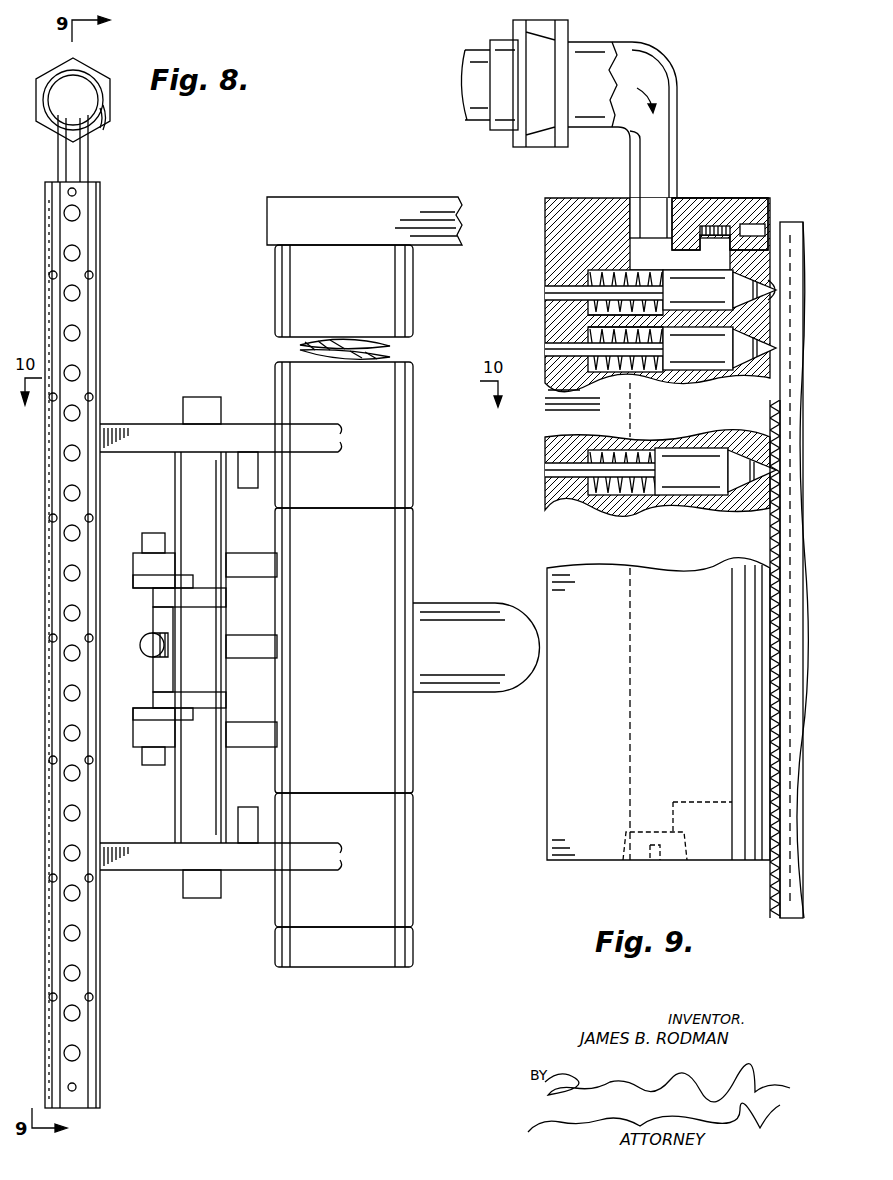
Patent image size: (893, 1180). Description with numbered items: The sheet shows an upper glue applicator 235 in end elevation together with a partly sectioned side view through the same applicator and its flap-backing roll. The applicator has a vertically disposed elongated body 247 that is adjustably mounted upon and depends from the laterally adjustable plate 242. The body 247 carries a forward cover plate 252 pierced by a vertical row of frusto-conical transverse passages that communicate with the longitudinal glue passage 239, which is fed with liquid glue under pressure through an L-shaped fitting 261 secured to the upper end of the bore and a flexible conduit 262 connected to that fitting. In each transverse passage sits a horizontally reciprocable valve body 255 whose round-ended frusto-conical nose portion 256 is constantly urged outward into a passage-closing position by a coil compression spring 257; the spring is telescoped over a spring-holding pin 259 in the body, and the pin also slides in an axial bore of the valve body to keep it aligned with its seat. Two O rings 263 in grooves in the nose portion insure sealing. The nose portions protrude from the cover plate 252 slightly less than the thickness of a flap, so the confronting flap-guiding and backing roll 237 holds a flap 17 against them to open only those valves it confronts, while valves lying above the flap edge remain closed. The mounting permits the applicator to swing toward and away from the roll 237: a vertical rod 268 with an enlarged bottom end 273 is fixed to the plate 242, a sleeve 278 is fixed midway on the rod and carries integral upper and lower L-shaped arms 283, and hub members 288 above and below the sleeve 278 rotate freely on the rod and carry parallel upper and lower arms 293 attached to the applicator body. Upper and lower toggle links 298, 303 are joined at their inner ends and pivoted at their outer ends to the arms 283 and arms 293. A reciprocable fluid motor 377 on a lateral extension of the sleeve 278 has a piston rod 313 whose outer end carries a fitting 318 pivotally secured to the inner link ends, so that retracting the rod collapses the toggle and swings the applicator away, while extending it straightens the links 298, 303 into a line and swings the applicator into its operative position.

In FIG. 9, the flap 17 is at (770, 622).
In FIG. 8, the upper glue applicator 235 is at (108, 645).
In FIG. 9, the upper glue applicator 235 is at (540, 244).
In FIG. 9, the flap-guiding and backing roll 237 is at (756, 554).
In FIG. 9, the longitudinal passage 239 is at (648, 242).
In FIG. 8, the laterally adjustable plate 242 is at (366, 212).
In FIG. 8, the elongated body 247 is at (90, 986).
In FIG. 9, the elongated body 247 is at (548, 434).
In FIG. 8, the forward cover plate 252 is at (80, 960).
In FIG. 9, the forward cover plate 252 is at (745, 200).
In FIG. 9, the valve body 255 is at (710, 372).
In FIG. 8, the frusto-conical nose portion 256 is at (78, 257).
In FIG. 9, the frusto-conical nose portion 256 is at (770, 288).
In FIG. 9, the coil compression spring 257 is at (612, 318).
In FIG. 9, the spring-holding pin 259 is at (545, 288).
In FIG. 8, the L-shaped fitting 261 is at (88, 161).
In FIG. 9, the L-shaped fitting 261 is at (678, 99).
In FIG. 9, the flexible conduit 262 is at (470, 56).
In FIG. 9, the O rings 263 is at (742, 506).
In FIG. 8, the vertical rod 268 is at (388, 356).
In FIG. 8, the enlarged bottom end 273 is at (392, 967).
In FIG. 8, the sleeve 278 is at (413, 567).
In FIG. 8, the L-shaped arms 283 is at (250, 563).
In FIG. 8, the hub members 288 is at (410, 481).
In FIG. 8, the upper and lower arms 293 is at (142, 424).
In FIG. 8, the upper toggle link 298 is at (135, 596).
In FIG. 8, the lower toggle link 303 is at (228, 598).
In FIG. 8, the piston rod 313 is at (250, 660).
In FIG. 8, the fitting 318 is at (160, 666).
In FIG. 8, the reciprocable fluid motor 377 is at (388, 692).